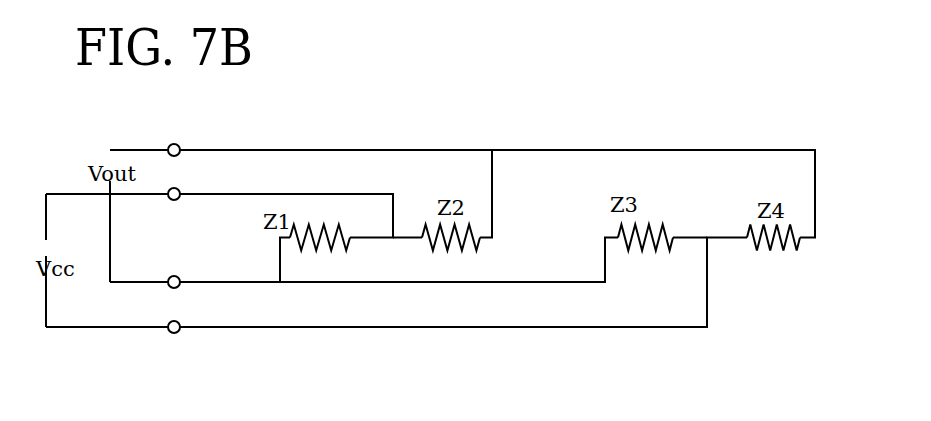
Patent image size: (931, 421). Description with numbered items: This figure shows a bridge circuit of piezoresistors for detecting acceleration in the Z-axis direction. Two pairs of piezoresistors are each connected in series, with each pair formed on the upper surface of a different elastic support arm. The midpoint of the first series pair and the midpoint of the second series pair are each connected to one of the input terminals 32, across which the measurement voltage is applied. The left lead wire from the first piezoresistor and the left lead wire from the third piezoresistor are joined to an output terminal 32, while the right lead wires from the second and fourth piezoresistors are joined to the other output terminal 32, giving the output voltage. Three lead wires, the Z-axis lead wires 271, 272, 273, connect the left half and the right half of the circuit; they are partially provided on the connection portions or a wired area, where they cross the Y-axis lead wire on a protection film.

The Z-axis lead wire 271 is at (515, 150).
The Z-axis lead wire 272 is at (510, 282).
The Z-axis lead wire 273 is at (567, 327).
The terminal 32 is at (174, 333).